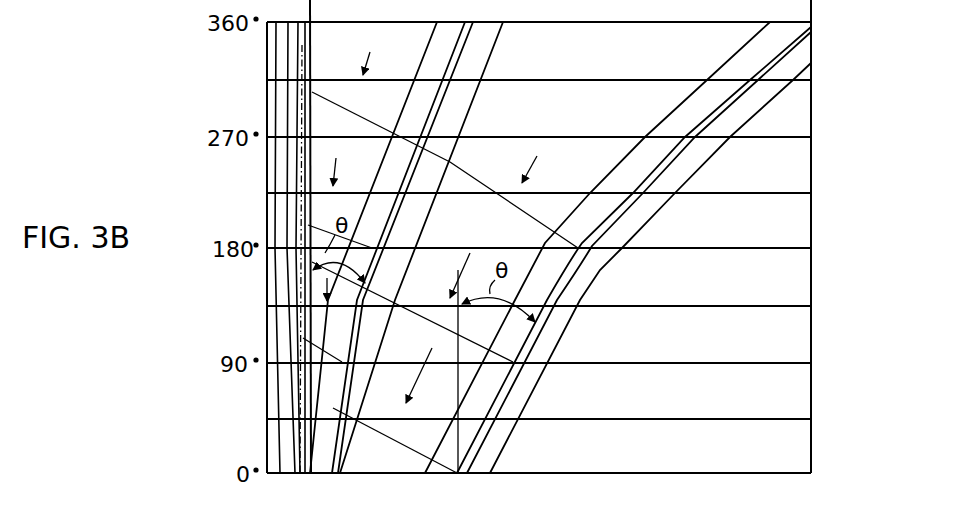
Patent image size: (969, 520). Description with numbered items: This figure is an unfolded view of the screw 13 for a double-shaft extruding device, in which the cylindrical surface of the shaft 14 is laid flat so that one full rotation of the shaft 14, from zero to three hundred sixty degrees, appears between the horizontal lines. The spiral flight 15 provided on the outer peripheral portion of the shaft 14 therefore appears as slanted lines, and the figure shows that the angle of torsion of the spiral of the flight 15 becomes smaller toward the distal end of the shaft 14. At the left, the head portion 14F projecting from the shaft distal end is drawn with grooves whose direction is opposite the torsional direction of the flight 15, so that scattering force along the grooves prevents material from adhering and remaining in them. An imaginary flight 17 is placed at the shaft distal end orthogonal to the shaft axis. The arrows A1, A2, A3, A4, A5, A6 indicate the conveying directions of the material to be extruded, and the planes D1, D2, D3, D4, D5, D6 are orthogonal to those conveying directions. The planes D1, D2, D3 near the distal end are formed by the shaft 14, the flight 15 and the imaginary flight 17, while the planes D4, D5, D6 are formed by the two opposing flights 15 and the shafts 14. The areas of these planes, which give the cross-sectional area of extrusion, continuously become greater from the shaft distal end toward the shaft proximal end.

The screw 13 is at (815, 108).
The shaft 14 is at (527, 152).
The head portion 14F is at (262, 103).
The spiral flight 15 is at (487, 85).
The imaginary flight 17 is at (303, 46).
The arrow A1 is at (327, 290).
The arrow A2 is at (336, 158).
The arrow A3 is at (370, 52).
The arrow A4 is at (412, 378).
The arrow A5 is at (462, 262).
The arrow A6 is at (537, 156).
The plane D1 is at (303, 338).
The plane D2 is at (308, 225).
The plane D3 is at (351, 112).
The plane D4 is at (397, 419).
The plane D5 is at (437, 324).
The plane D6 is at (498, 196).